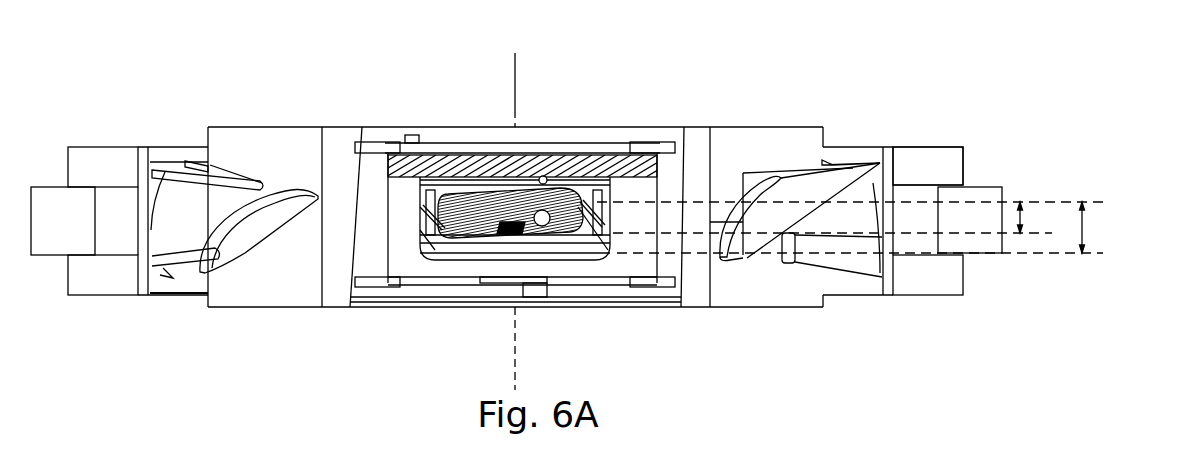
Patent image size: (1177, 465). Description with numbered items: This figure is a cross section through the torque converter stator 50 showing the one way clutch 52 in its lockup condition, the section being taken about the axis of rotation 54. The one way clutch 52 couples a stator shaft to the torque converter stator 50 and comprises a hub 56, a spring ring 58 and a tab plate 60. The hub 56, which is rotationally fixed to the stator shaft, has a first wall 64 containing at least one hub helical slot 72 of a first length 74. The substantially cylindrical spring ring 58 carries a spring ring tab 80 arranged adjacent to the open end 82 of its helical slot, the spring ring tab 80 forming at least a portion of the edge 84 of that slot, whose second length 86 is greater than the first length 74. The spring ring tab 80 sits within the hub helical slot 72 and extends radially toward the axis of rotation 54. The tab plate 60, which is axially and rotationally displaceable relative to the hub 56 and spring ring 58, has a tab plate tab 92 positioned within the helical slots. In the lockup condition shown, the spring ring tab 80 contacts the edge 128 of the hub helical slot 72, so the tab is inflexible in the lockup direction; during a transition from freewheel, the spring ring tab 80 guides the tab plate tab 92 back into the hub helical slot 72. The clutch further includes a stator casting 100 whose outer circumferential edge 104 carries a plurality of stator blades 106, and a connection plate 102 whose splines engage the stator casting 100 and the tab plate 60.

The torque converter stator 50 is at (1090, 93).
The one way clutch 52 is at (365, 310).
The axis of rotation 54 is at (517, 73).
The hub 56 is at (567, 200).
The spring ring 58 is at (447, 195).
The tab plate 60 is at (537, 258).
The first wall 64 is at (458, 203).
The hub helical slot 72 is at (487, 212).
The first length 74 is at (1021, 221).
The spring ring tab 80 is at (510, 235).
The open end 82 is at (522, 238).
The edge 84 is at (497, 240).
The second length 86 is at (1084, 228).
The tab plate tab 92 is at (552, 211).
The stator casting 100 is at (330, 125).
The connection plate 102 is at (234, 219).
The outer circumferential edge 104 is at (965, 167).
The stator blade 106 is at (853, 180).
The edge 128 is at (487, 245).